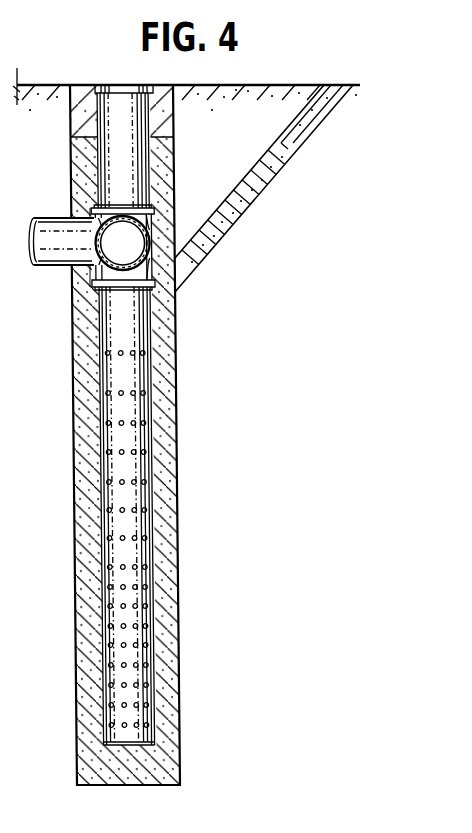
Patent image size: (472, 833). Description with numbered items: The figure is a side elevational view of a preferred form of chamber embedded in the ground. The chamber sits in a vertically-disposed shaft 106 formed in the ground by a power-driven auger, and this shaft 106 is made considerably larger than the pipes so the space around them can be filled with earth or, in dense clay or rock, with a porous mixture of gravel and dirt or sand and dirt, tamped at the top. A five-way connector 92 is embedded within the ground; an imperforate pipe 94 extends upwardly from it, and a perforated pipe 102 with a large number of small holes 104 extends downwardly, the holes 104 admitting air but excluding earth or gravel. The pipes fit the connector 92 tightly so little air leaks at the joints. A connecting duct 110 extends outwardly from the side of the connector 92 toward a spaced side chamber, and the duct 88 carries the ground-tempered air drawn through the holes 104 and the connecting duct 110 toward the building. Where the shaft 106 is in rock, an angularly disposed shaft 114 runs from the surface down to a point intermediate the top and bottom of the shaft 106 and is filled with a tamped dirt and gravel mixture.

The duct 88 is at (54, 262).
The five-way connector 92 is at (90, 213).
The imperforate pipe 94 is at (140, 163).
The perforated pipe 102 is at (115, 522).
The holes 104 is at (103, 420).
The shaft 106 is at (78, 129).
The connecting duct 110 is at (152, 214).
The angularly disposed shaft 114 is at (252, 202).